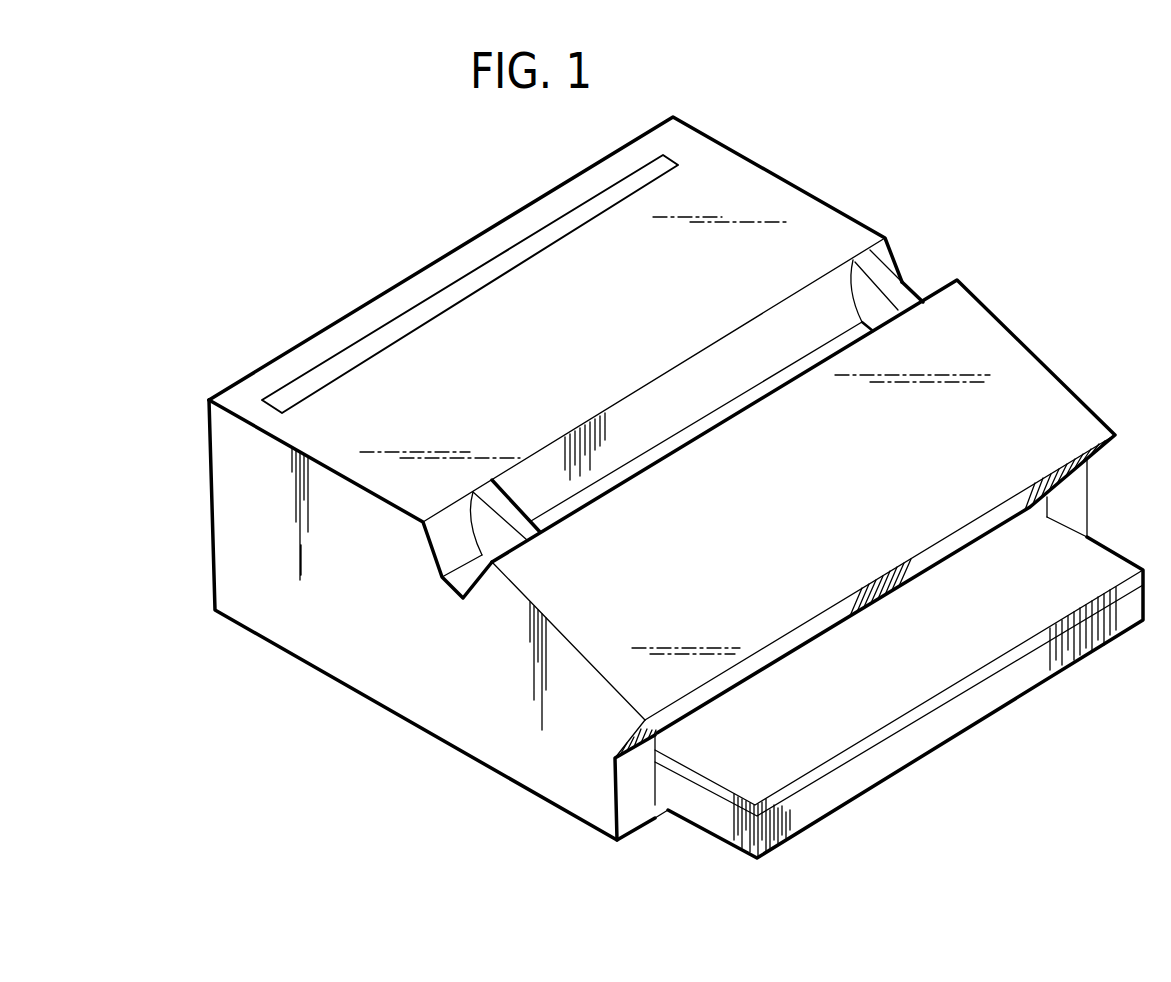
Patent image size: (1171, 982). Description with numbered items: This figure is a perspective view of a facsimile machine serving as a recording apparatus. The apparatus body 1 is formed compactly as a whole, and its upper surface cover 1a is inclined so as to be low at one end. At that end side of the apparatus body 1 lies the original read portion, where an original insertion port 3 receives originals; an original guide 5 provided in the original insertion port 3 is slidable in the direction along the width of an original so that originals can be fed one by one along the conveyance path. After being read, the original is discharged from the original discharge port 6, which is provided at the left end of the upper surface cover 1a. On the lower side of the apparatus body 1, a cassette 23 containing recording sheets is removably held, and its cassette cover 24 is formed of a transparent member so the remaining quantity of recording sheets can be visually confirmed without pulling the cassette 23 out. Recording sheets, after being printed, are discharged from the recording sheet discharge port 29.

The apparatus body 1 is at (424, 748).
The upper surface cover 1a is at (1033, 367).
The original insertion port 3 is at (777, 377).
The original guide 5 is at (508, 503).
The original discharge port 6 is at (1017, 530).
The cassette 23 is at (887, 768).
The cassette cover 24 is at (965, 662).
The recording sheet discharge port 29 is at (500, 263).